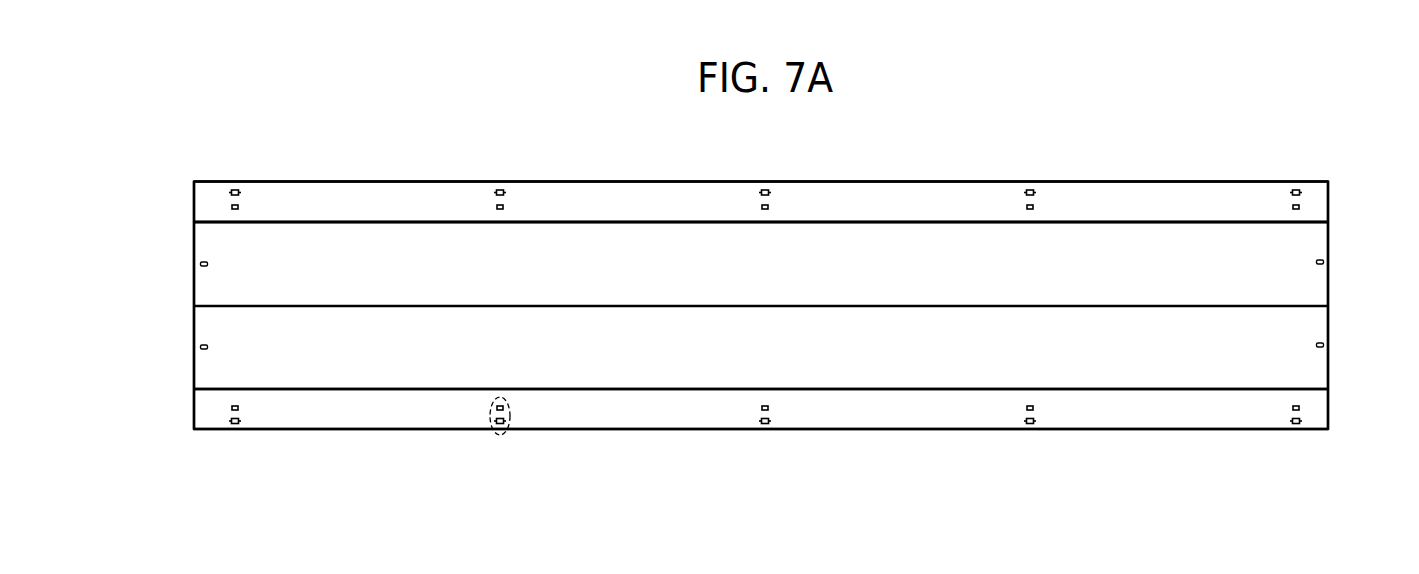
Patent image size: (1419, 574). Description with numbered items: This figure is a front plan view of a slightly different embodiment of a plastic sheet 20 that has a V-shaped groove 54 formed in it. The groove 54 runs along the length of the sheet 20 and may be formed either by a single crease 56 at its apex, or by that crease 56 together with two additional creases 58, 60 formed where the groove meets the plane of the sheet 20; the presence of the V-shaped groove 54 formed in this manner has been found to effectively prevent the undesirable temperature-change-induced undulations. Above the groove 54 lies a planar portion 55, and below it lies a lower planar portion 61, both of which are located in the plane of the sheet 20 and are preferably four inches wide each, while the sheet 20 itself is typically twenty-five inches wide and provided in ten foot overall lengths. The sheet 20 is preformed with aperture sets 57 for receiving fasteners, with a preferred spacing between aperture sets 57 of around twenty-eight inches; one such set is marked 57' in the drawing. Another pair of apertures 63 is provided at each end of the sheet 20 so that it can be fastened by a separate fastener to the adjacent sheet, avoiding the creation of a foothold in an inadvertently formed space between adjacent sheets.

The plastic sheet 20 is at (443, 182).
The V-shaped groove 54 is at (176, 264).
The planar portion 55 is at (903, 195).
The crease 56 is at (825, 305).
The aperture sets 57 is at (765, 149).
The fastener 57' is at (545, 442).
The crease 58 is at (676, 223).
The crease 60 is at (878, 388).
The lower planar portion 61 is at (904, 431).
The apertures 63 is at (1324, 262).